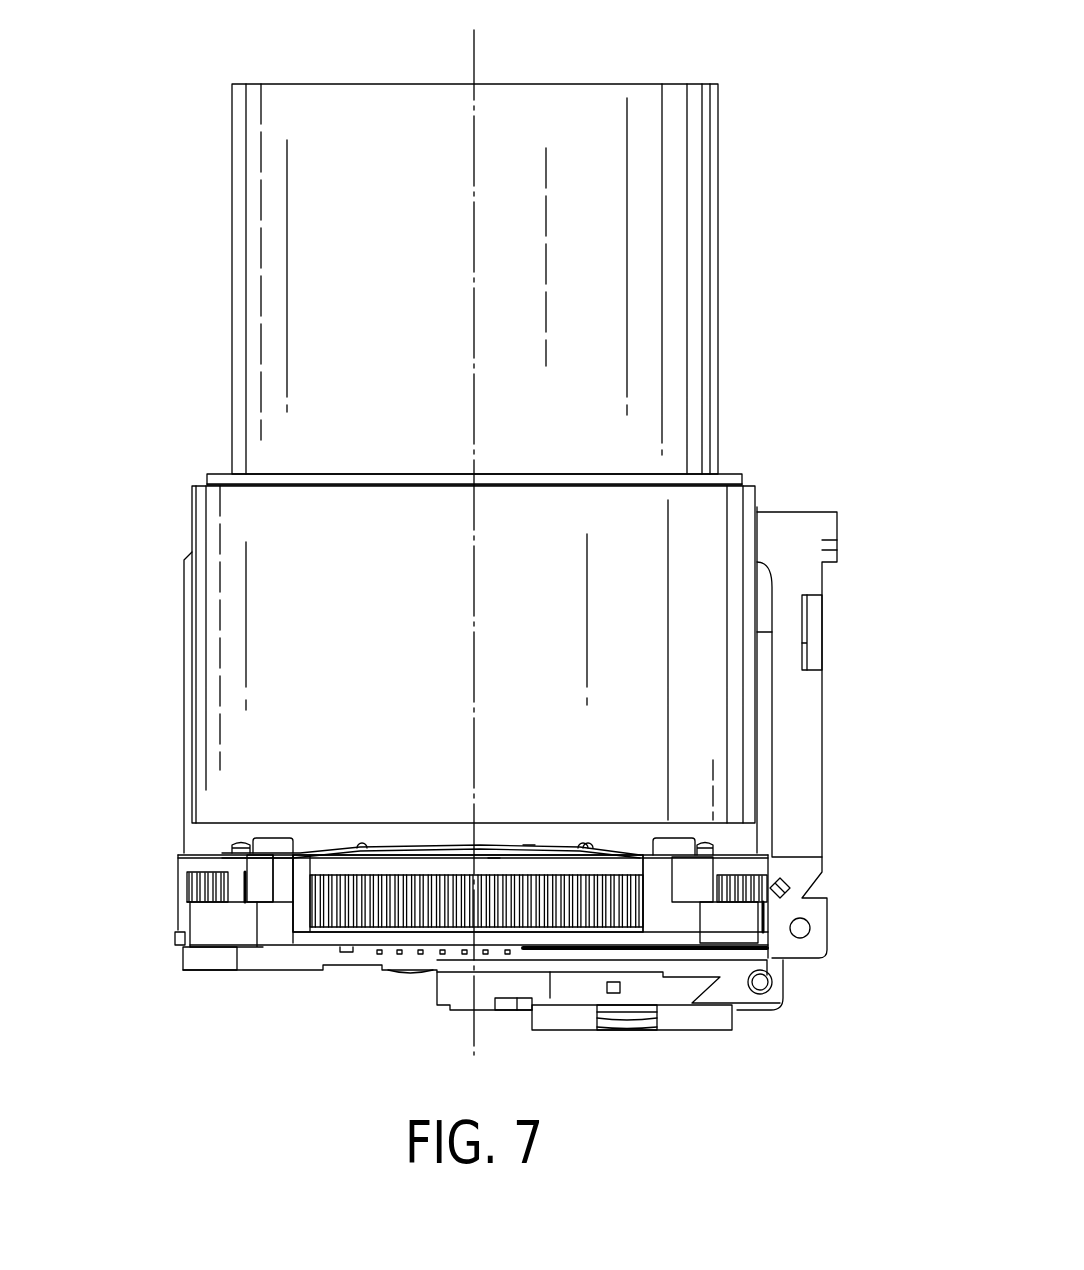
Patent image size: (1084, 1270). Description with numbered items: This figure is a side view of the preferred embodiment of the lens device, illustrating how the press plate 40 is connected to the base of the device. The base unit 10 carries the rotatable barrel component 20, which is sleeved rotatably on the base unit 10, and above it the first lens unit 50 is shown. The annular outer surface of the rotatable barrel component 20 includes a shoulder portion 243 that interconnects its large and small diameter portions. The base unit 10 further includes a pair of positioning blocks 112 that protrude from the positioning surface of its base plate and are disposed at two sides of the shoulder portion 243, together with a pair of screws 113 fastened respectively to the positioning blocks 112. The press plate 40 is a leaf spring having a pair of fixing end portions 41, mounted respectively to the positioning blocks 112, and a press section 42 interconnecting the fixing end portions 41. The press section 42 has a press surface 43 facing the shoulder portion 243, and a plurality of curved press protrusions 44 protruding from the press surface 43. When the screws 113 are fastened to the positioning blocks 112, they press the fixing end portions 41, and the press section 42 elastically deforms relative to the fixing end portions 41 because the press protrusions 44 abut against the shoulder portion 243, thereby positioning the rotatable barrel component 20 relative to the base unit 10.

The base unit 10 is at (291, 956).
The rotatable barrel component 20 is at (750, 501).
The press plate 40 is at (331, 832).
The fixing end portions 41 is at (223, 852).
The press section 42 is at (527, 847).
The press surface 43 is at (493, 858).
The curved press protrusions 44 is at (590, 848).
The first lens unit 50 is at (718, 181).
The positioning blocks 112 is at (282, 877).
The screws 113 is at (273, 838).
The shoulder portion 243 is at (410, 853).